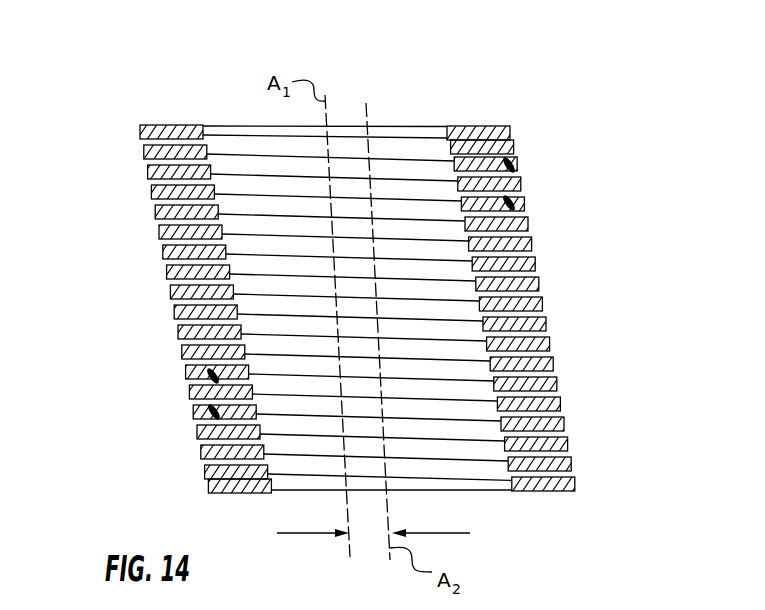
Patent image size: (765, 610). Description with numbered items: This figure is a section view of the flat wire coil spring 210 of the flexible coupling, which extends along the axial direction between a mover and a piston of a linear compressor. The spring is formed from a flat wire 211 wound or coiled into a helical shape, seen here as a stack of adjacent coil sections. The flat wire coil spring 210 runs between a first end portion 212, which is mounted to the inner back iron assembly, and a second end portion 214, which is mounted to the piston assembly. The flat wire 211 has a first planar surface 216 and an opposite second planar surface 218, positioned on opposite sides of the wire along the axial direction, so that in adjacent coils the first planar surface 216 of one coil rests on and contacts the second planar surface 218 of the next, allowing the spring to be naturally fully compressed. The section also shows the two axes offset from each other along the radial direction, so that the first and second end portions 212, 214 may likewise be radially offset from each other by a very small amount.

The flat wire coil spring 210 is at (554, 82).
The second end portion 214 is at (118, 130).
The first end portion 212 is at (198, 493).
The flat wire 211 is at (161, 234).
The first planar surface 216 is at (508, 167).
The second planar surface 218 is at (510, 203).